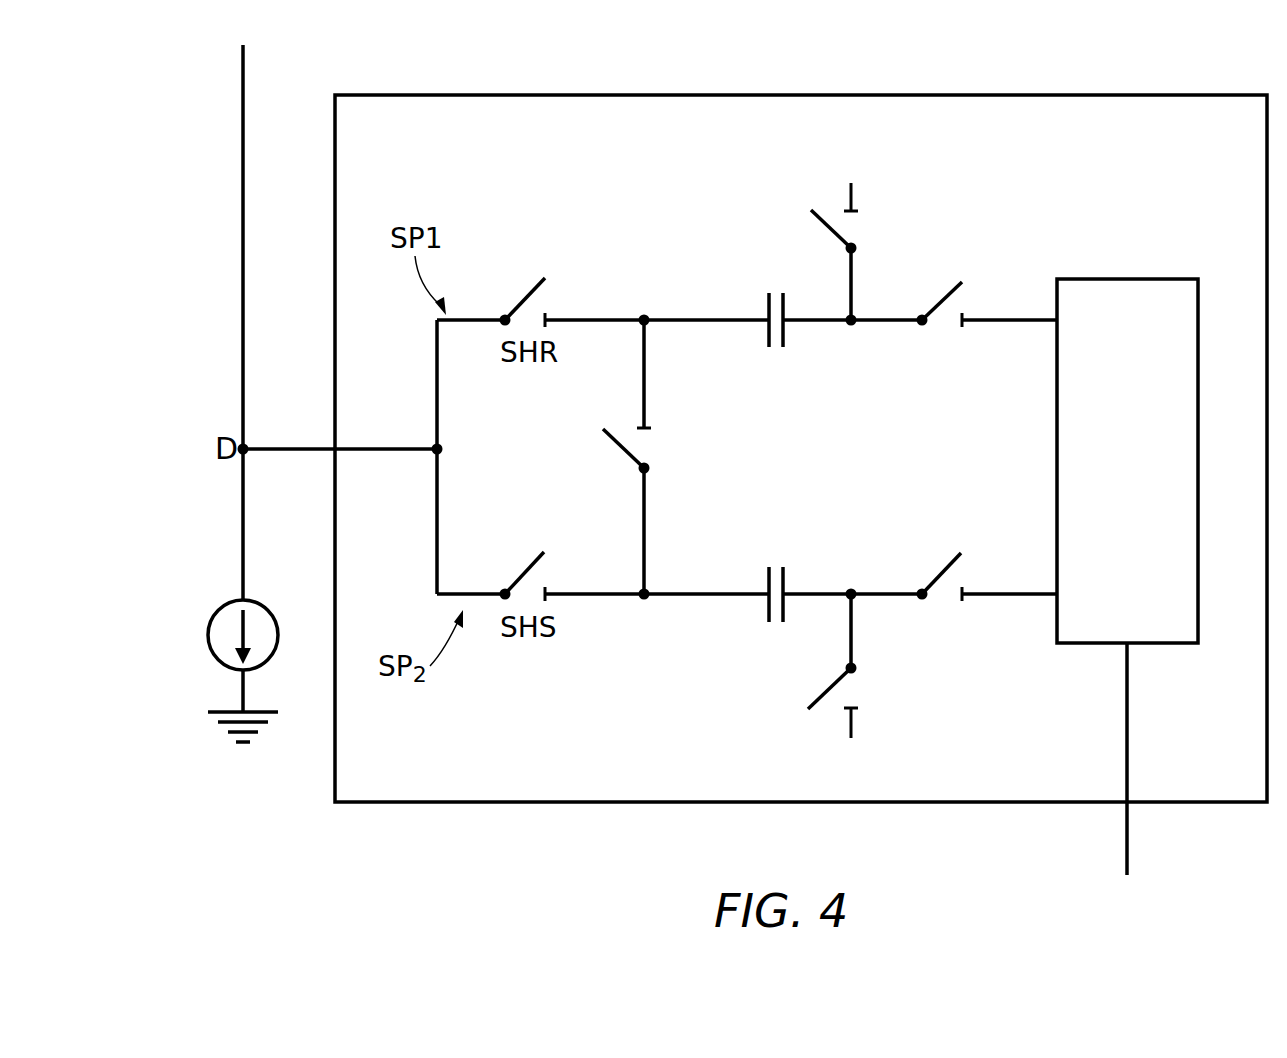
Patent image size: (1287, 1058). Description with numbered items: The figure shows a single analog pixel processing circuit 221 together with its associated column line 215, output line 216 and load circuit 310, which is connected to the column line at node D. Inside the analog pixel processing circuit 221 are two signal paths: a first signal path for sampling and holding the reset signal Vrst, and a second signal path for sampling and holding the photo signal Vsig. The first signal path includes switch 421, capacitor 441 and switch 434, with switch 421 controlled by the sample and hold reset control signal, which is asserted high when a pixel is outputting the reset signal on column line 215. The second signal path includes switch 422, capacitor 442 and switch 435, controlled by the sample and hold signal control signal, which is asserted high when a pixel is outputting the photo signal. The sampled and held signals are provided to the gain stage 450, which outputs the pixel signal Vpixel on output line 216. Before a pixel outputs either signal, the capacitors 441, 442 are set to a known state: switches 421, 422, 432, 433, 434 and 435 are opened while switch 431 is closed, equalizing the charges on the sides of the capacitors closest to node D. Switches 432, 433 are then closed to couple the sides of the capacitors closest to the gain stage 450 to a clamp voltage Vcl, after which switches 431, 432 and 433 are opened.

The column line 215 is at (243, 84).
The analog pixel processing circuit 221 is at (596, 161).
The load circuit 310 is at (208, 630).
The switch 421 is at (522, 300).
The switch 422 is at (533, 562).
The switch 431 is at (617, 443).
The switch 432 is at (826, 226).
The switch 433 is at (824, 688).
The switch 434 is at (940, 302).
The switch 435 is at (940, 575).
The capacitor 441 is at (768, 306).
The capacitor 442 is at (768, 580).
The gain stage 450 is at (1105, 459).
The output line 216 is at (1127, 848).